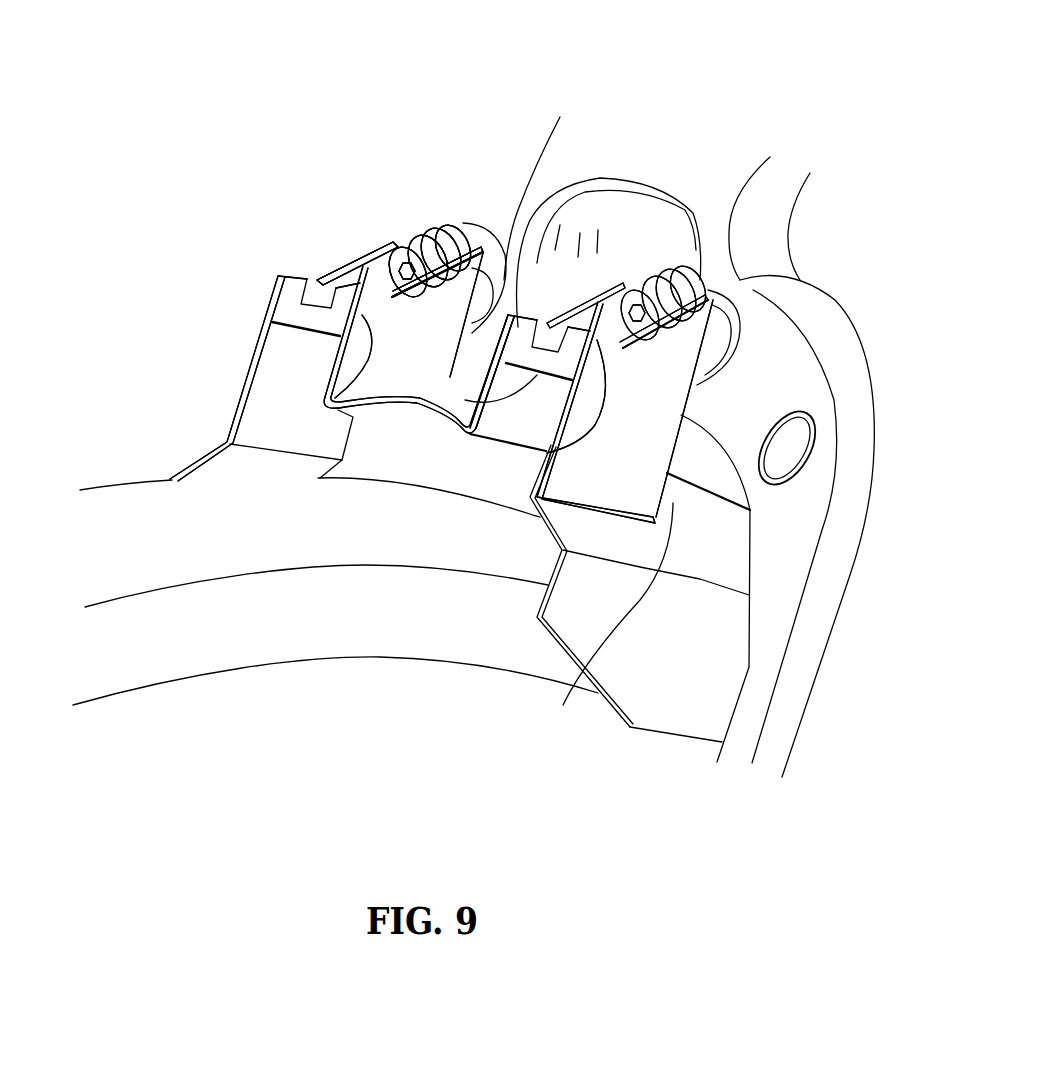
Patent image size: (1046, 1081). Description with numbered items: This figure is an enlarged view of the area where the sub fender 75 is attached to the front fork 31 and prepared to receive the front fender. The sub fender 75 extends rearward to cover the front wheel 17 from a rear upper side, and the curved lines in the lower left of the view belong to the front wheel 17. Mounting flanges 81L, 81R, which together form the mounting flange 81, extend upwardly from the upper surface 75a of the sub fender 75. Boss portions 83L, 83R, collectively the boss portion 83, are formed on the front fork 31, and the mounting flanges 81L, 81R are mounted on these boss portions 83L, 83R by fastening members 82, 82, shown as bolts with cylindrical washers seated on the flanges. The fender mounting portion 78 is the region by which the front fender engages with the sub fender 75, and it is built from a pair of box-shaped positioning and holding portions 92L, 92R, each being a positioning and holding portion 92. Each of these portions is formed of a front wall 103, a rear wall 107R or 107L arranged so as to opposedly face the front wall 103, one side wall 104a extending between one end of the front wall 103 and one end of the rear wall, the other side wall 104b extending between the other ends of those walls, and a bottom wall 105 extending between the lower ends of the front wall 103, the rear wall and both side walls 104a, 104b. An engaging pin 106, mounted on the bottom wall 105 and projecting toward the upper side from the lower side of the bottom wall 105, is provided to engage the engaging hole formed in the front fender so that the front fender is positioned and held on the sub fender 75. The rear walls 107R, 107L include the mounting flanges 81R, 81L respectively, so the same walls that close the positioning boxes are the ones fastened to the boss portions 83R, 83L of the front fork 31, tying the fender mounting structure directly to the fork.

The front wheel 17 is at (117, 512).
The front fork 31 is at (790, 353).
The sub fender 75 is at (677, 707).
The upper surface 75a is at (607, 618).
The fender mounting portion 78 is at (416, 177).
The mounting flange 81 is at (497, 25).
The mounting flange 81R is at (433, 232).
The mounting flange 81L is at (691, 217).
The fastening member 82 is at (412, 248).
The boss portion 83 is at (670, 268).
The boss portion 83R is at (500, 227).
The boss portion 83L is at (777, 327).
The positioning and holding portion 92 is at (460, 350).
The positioning and holding portion 92R is at (333, 270).
The positioning and holding portion 92L is at (578, 316).
The front wall 103 is at (292, 272).
The side wall 104a is at (333, 370).
The side wall 104b is at (267, 293).
The bottom wall 105 is at (313, 330).
The engaging pin 106 is at (370, 268).
The rear wall 107R is at (458, 360).
The rear wall 107L is at (688, 393).